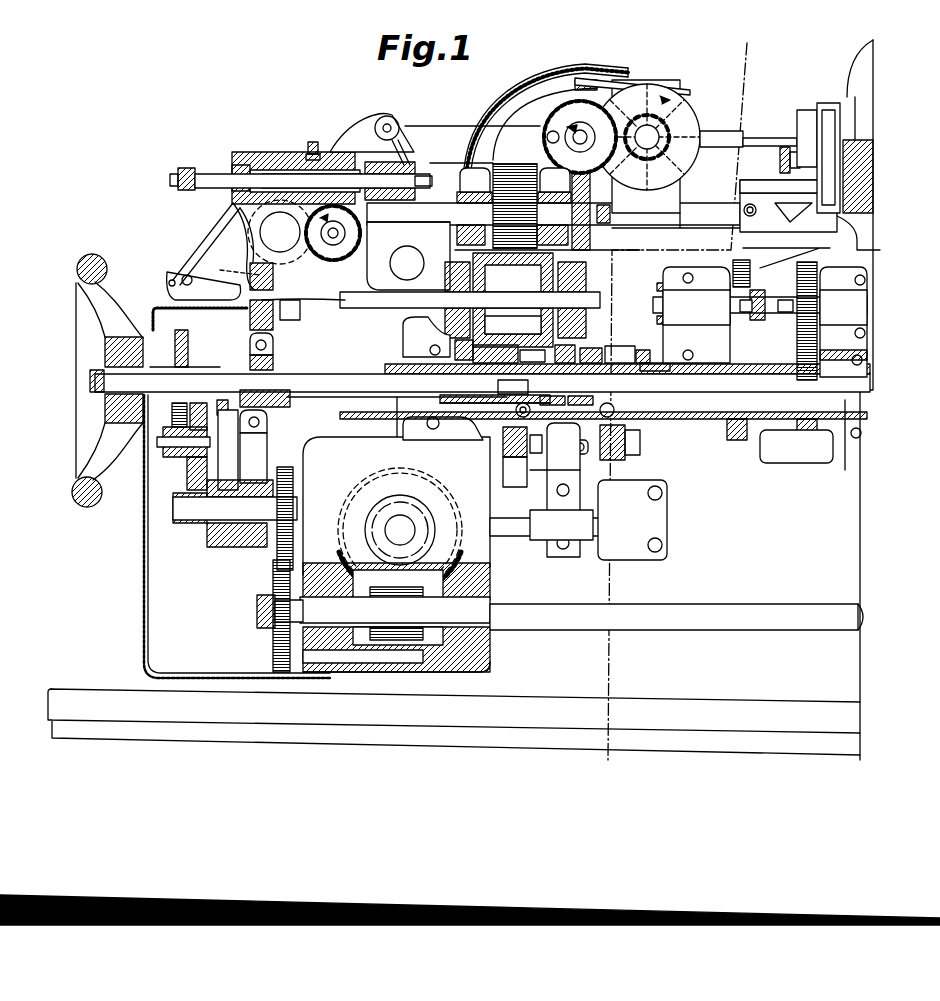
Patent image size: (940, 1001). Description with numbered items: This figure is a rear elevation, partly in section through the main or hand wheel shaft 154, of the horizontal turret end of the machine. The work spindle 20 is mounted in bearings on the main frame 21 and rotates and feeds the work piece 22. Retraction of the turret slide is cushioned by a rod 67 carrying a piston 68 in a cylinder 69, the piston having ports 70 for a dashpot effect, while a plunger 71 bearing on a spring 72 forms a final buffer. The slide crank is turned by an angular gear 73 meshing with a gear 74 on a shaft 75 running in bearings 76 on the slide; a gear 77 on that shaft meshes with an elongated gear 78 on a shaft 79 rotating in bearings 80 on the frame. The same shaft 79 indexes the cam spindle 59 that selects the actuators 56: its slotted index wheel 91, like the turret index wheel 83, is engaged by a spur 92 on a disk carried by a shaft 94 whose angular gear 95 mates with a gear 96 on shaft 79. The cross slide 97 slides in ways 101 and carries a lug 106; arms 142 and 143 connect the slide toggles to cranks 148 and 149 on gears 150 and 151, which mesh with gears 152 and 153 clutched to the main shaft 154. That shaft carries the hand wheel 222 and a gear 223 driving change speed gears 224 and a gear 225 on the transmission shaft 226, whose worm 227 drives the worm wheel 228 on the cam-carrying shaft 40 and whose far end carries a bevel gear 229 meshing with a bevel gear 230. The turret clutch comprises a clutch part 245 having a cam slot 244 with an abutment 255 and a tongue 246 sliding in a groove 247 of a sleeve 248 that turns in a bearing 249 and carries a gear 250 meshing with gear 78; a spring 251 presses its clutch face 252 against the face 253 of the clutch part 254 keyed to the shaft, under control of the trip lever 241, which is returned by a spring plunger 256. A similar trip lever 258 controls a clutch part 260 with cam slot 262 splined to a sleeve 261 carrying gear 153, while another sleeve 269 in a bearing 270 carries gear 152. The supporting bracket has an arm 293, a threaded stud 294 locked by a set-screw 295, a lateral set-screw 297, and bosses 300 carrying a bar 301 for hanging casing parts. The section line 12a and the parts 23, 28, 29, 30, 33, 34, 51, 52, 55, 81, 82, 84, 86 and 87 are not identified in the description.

The section line 12a is at (700, 58).
The work spindle 20 is at (805, 110).
The main frame 21 is at (845, 126).
The work piece 22 is at (761, 138).
The rod 23 is at (461, 157).
The hub 28 is at (581, 129).
The rod 29 is at (450, 126).
The opening 30 is at (410, 248).
The link 33 is at (412, 152).
The pivot lever 34 is at (392, 120).
The cam shaft 40 is at (402, 530).
The lever arm 51 is at (226, 214).
The rod 52 is at (200, 311).
The lever plate 55 is at (186, 276).
The actuators 56 is at (210, 248).
The cam spindle 59 is at (280, 232).
The rod 67 is at (398, 172).
The piston 68 is at (313, 165).
The cylinder 69 is at (293, 160).
The ports 70 is at (268, 160).
The plunger 71 is at (247, 165).
The spring 72 is at (230, 166).
The angular gear 73 is at (549, 123).
The mating gear 74 is at (594, 246).
The shaft 75 is at (611, 216).
The bearings 76 is at (460, 246).
The gear 77 is at (520, 168).
The gear 78 is at (475, 262).
The shaft 79 is at (470, 300).
The bearings 80 is at (598, 263).
The pawl pin 81 is at (547, 138).
The disk teeth 82 is at (641, 112).
The turret index wheel 83 is at (700, 126).
The hub 84 is at (660, 139).
The flexible hose 86 is at (575, 95).
The plate 87 is at (683, 94).
The index wheel 91 is at (300, 316).
The spur 92 is at (408, 229).
The shaft 94 is at (333, 233).
The angular gear 95 is at (553, 214).
The gear 96 is at (302, 316).
The cross slide 97 is at (788, 186).
The ways 101 is at (810, 215).
The lug 106 is at (780, 162).
The arm 142 is at (762, 292).
The arm 143 is at (791, 314).
The crank 148 is at (748, 268).
The crank 149 is at (792, 297).
The gear 150 is at (847, 314).
The gear 151 is at (701, 315).
The gear 152 is at (796, 441).
The gear 153 is at (603, 439).
The main or hand wheel shaft 154 is at (320, 380).
The hand wheel 222 is at (108, 268).
The gear 223 is at (190, 348).
The change speed gears 224 is at (234, 550).
The gear 225 is at (273, 642).
The transmission shaft 226 is at (543, 604).
The worm 227 is at (395, 617).
The worm wheel 228 is at (396, 486).
The bevel gear 229 is at (517, 384).
The bevel gear 230 is at (550, 490).
The trip lever 241 is at (505, 447).
The cam slot 244 is at (518, 354).
The clutch part 245 is at (546, 397).
The tongue 246 is at (495, 386).
The groove 247 is at (480, 392).
The sleeve 248 is at (397, 391).
The bearing 249 is at (426, 337).
The gear 250 is at (463, 347).
The spring 251 is at (513, 325).
The clutch face 252 is at (572, 348).
The clutch face 253 is at (595, 353).
The clutch part 254 is at (576, 397).
The abutment 255 is at (638, 451).
The spring plunger 256 is at (505, 478).
The trip lever 258 is at (640, 462).
The clutch part 260 is at (621, 348).
The sleeve 261 is at (654, 361).
The cam slot 262 is at (649, 350).
The sleeve 269 is at (840, 358).
The bearing 270 is at (849, 468).
The arm 293 is at (477, 438).
The threaded stud 294 is at (555, 469).
The set-screw 295 is at (568, 440).
The lateral set-screw 297 is at (541, 411).
The bosses 300 is at (592, 515).
The bar 301 is at (590, 522).